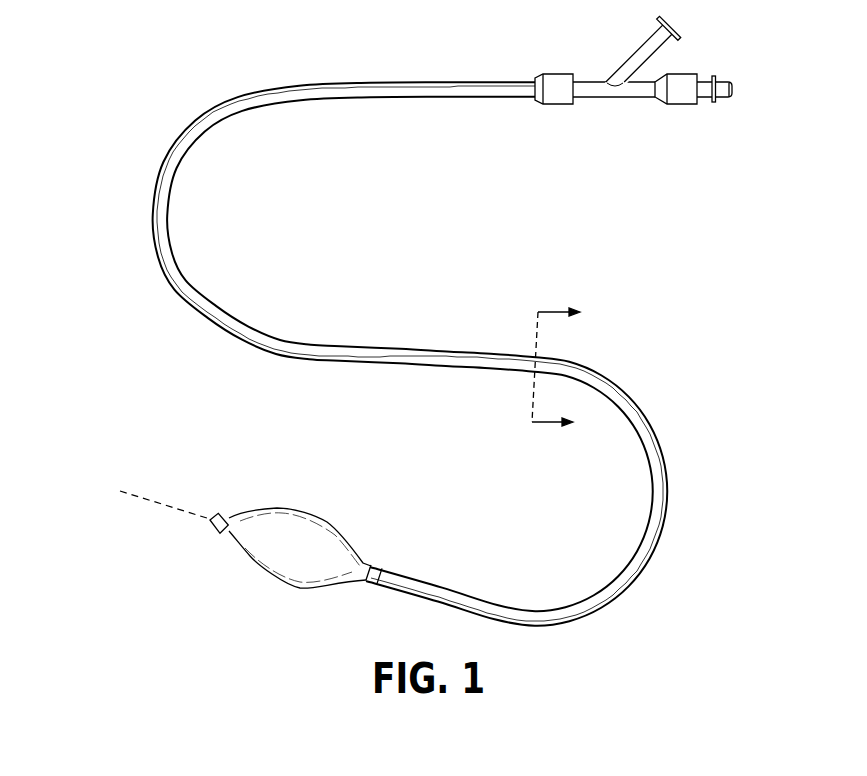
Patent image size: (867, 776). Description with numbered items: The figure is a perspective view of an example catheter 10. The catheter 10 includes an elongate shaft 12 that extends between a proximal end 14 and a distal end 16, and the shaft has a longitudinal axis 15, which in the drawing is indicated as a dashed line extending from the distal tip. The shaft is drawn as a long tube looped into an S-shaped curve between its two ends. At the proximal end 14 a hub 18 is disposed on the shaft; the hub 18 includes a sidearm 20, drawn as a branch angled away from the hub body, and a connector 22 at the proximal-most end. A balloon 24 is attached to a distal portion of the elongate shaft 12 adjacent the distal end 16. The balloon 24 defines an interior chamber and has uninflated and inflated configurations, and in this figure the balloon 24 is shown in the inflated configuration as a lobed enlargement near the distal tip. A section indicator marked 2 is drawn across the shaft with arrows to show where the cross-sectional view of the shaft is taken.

The catheter 10 is at (120, 220).
The elongate shaft 12 is at (243, 115).
The proximal end 14 is at (555, 122).
The longitudinal axis 15 is at (147, 504).
The distal end 16 is at (223, 510).
The hub 18 is at (615, 103).
The sidearm 20 is at (633, 50).
The connector 22 is at (683, 106).
The balloon 24 is at (295, 589).
The section line 2- 2 is at (570, 369).